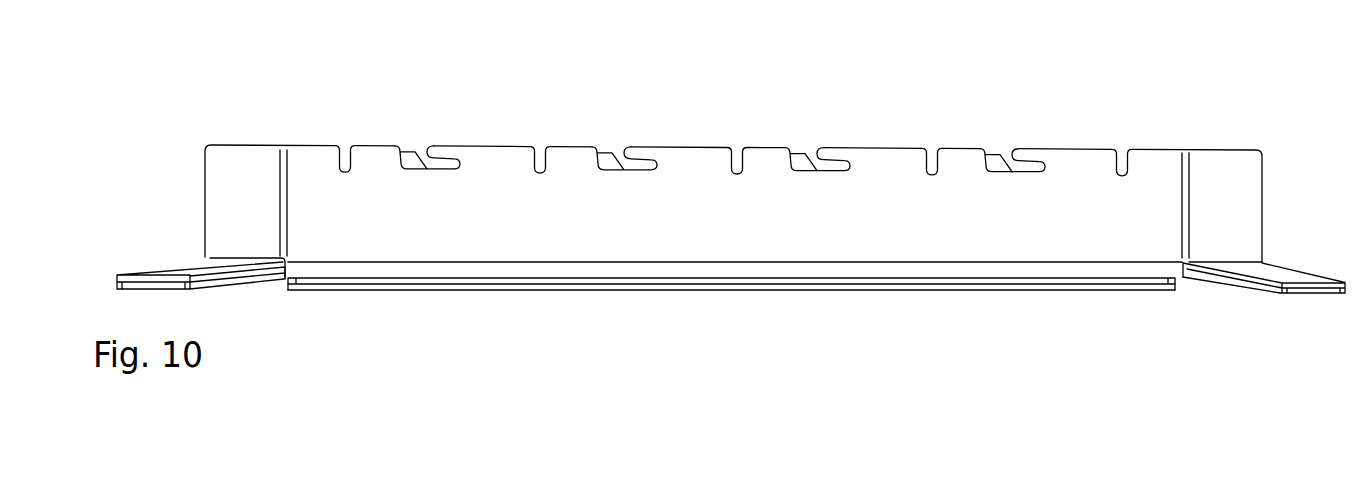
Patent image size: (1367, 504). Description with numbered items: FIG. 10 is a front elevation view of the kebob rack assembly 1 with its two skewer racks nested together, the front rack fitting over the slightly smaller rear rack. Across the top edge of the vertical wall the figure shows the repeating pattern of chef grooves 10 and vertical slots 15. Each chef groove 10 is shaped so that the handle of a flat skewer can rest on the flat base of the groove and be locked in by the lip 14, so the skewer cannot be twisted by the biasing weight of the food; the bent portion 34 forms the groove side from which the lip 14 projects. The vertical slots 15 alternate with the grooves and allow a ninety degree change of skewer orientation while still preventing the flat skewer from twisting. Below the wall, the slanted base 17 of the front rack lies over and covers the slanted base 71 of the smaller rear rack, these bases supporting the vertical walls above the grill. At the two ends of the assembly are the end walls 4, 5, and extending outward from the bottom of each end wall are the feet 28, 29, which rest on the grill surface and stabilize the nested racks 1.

The kebob rack assembly 1 is at (626, 59).
The first side wall 4 is at (220, 195).
The second side wall 5 is at (1198, 173).
The chef grooves 10 is at (1028, 167).
The lip 14 is at (1028, 149).
The vertical slots 15 is at (933, 176).
The slanted base 17 is at (678, 273).
The first foot 28 is at (182, 273).
The second foot 29 is at (1272, 272).
The bent portion 34 is at (986, 176).
The slanted base 71 is at (827, 293).